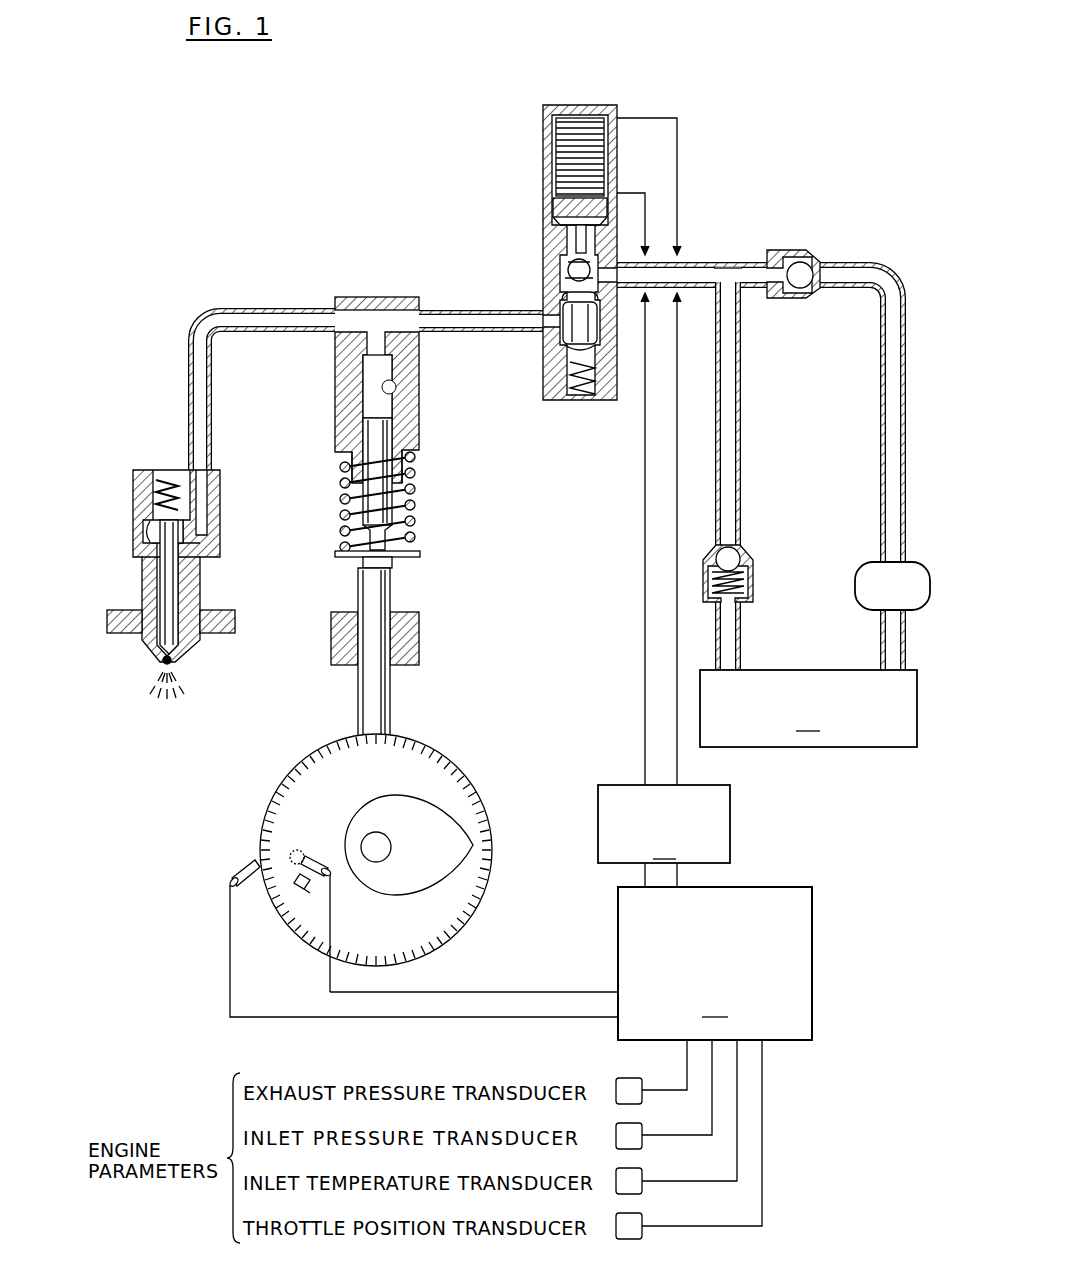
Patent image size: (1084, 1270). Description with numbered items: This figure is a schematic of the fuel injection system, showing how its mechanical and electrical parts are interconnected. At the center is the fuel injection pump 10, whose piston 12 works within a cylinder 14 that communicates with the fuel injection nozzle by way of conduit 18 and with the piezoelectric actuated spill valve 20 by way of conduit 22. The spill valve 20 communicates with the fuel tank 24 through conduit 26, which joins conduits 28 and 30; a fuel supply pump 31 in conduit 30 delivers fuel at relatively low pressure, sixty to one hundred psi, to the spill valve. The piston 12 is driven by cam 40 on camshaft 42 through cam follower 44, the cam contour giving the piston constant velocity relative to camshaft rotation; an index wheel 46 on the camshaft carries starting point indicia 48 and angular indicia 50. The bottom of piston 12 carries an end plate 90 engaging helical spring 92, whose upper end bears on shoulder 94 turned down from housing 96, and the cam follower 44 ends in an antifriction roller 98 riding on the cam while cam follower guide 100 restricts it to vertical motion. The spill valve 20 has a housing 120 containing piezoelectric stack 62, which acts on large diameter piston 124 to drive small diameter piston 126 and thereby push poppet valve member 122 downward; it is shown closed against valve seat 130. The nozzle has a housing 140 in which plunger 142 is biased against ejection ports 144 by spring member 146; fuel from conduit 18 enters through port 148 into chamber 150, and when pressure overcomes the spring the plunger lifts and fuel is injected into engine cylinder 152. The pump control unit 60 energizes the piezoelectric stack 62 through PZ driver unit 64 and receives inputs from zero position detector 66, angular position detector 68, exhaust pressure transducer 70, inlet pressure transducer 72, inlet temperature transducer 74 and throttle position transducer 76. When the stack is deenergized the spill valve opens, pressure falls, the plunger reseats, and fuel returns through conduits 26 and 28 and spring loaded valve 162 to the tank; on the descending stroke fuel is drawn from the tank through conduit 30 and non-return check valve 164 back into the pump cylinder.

The fuel injection pump 10 is at (359, 547).
The piston 12 is at (383, 440).
The cylinder 14 is at (392, 370).
The conduit 18 is at (212, 376).
The piezoelectric actuated spill valve 20 is at (576, 252).
The conduit 22 is at (490, 332).
The fuel tank 24 is at (808, 708).
The conduit 26 is at (688, 262).
The conduit 28 is at (742, 350).
The conduit 30 is at (907, 352).
The fuel supply pump 31 is at (920, 566).
The cam 40 is at (357, 828).
The camshaft 42 is at (391, 846).
The cam follower 44 is at (392, 684).
The index wheel 46 is at (468, 904).
The starting point indicia 48 is at (310, 886).
The angular indicia 50 is at (472, 936).
The pump control unit 60 is at (715, 963).
The piezoelectric stack 62 is at (568, 142).
The PZ driver unit 64 is at (664, 502).
The zero or initial position detector 66 is at (330, 857).
The angular position detector 68 is at (228, 870).
The exhaust pressure transducer 70 is at (636, 1078).
The inlet pressure transducer 72 is at (640, 1123).
The inlet temperature transducer 74 is at (640, 1168).
The throttle position transducer 76 is at (640, 1213).
The washer or end plate 90 is at (412, 549).
The helical spring 92 is at (420, 492).
The shoulder 94 is at (420, 452).
The housing 96 is at (420, 389).
The antifriction roller 98 is at (390, 786).
The cam follower guide 100 is at (420, 628).
The housing 120 is at (618, 145).
The poppet valve member 122 is at (565, 269).
The large diameter piston 124 is at (553, 205).
The small diameter piston 126 is at (578, 236).
The valve seat 130 is at (563, 296).
The housing 140 is at (171, 550).
The plunger 142 is at (180, 579).
The ejection ports 144 is at (180, 662).
The spring member 146 is at (165, 470).
The port 148 is at (205, 482).
The chamber 150 is at (148, 539).
The internal combustion engine cylinder 152 is at (190, 710).
The spring loaded valve 162 is at (755, 562).
The non-return check valve 164 is at (792, 250).